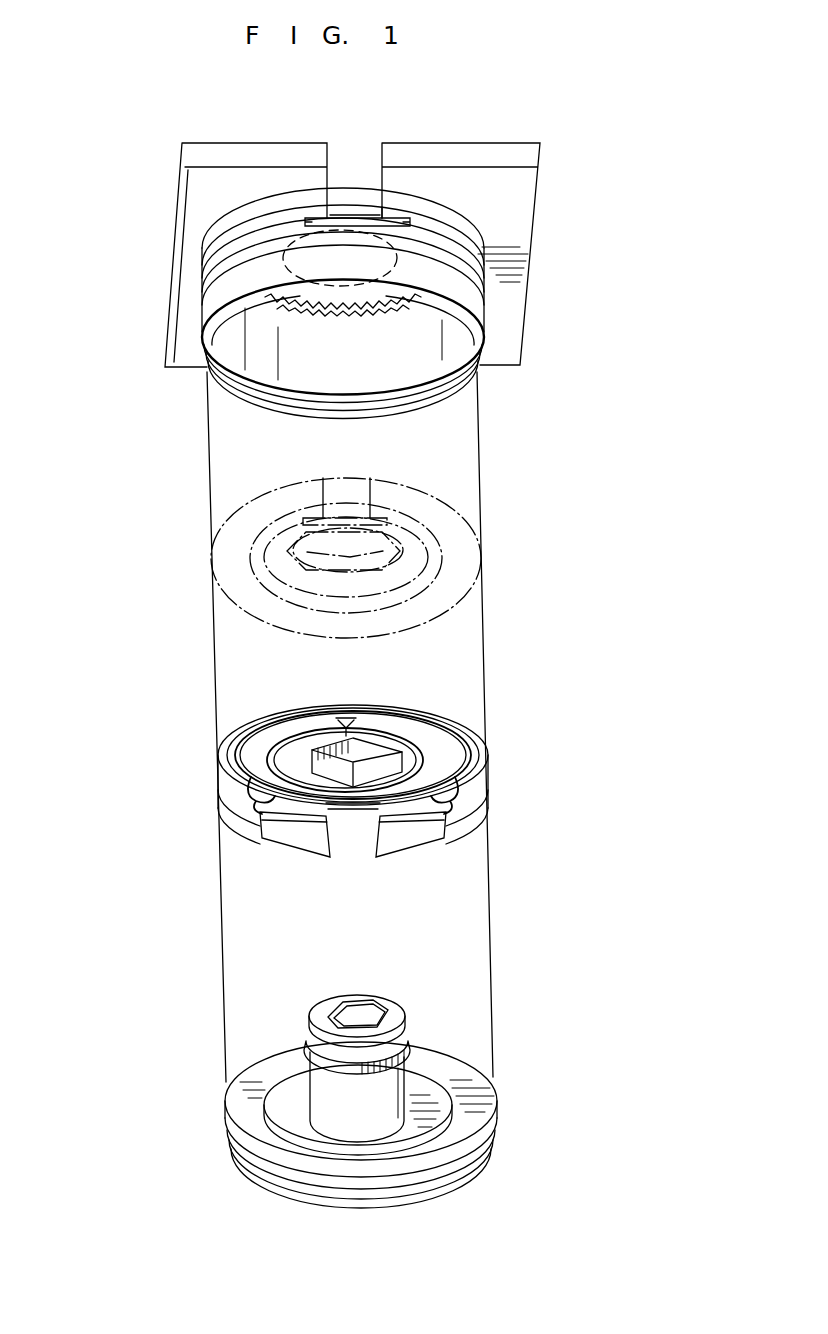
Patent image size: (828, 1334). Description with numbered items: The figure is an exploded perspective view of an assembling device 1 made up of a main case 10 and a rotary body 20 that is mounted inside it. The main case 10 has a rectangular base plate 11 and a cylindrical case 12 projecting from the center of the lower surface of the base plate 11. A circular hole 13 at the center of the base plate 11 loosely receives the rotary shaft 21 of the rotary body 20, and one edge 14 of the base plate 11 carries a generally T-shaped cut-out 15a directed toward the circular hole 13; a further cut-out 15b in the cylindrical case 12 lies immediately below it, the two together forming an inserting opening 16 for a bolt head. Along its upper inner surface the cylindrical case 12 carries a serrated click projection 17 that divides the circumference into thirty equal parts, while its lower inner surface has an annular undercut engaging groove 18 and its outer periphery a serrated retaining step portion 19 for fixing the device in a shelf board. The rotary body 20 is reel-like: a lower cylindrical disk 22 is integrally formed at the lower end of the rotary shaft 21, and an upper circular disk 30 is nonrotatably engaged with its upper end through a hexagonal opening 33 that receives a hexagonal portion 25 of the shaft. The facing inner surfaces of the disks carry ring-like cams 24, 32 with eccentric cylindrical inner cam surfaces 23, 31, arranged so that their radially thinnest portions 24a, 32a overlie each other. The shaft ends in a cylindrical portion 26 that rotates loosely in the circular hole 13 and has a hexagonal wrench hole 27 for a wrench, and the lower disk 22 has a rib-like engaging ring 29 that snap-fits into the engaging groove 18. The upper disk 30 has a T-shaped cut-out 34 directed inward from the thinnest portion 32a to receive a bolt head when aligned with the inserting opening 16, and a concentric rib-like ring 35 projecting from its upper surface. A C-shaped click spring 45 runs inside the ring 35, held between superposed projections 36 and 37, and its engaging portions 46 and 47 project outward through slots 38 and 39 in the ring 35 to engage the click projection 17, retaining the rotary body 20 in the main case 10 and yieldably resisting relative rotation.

The assembling device 1 is at (319, 561).
The main case 10 is at (388, 249).
The base plate 11 is at (493, 177).
The cylindrical case 12 is at (467, 384).
The circular hole 13 is at (283, 255).
The edge of base plate 14 is at (274, 150).
The T-shaped cut-out 15a is at (342, 163).
The cut-out 15b is at (382, 207).
The inserting opening 16 is at (348, 200).
The click projection 17 is at (210, 327).
The engaging groove 18 is at (468, 360).
The retaining step portion 19 is at (204, 282).
The rotary body 20 is at (414, 1108).
The rotary shaft 21 is at (320, 1085).
The lower cylindrical disk 22 is at (450, 1120).
The inner cam surface 23 is at (437, 1086).
The ring-like cam 24 is at (480, 1157).
The thinnest portion of cam 24a is at (377, 1162).
The hexagonal portion 25 is at (410, 1042).
The cylindrical portion 26 is at (407, 1018).
The hexagonal wrench hole 27 is at (353, 1017).
The engaging ring 29 is at (458, 1168).
The upper circular disk 30 is at (432, 537).
The inner cam surface 31 is at (272, 585).
The ring-like cam 32 is at (460, 588).
The thinnest portion of cam 32a is at (340, 513).
The hexagonal opening 33 is at (393, 543).
The T-shaped cut-out 34 is at (343, 483).
The rib-like ring 35 is at (352, 774).
The projection 36 is at (348, 723).
The projection 37 is at (345, 725).
The slot in ring 38 is at (265, 832).
The slot in ring 39 is at (352, 772).
The click spring 45 is at (378, 727).
The engaging portion 46 is at (262, 806).
The engaging portion 47 is at (450, 822).